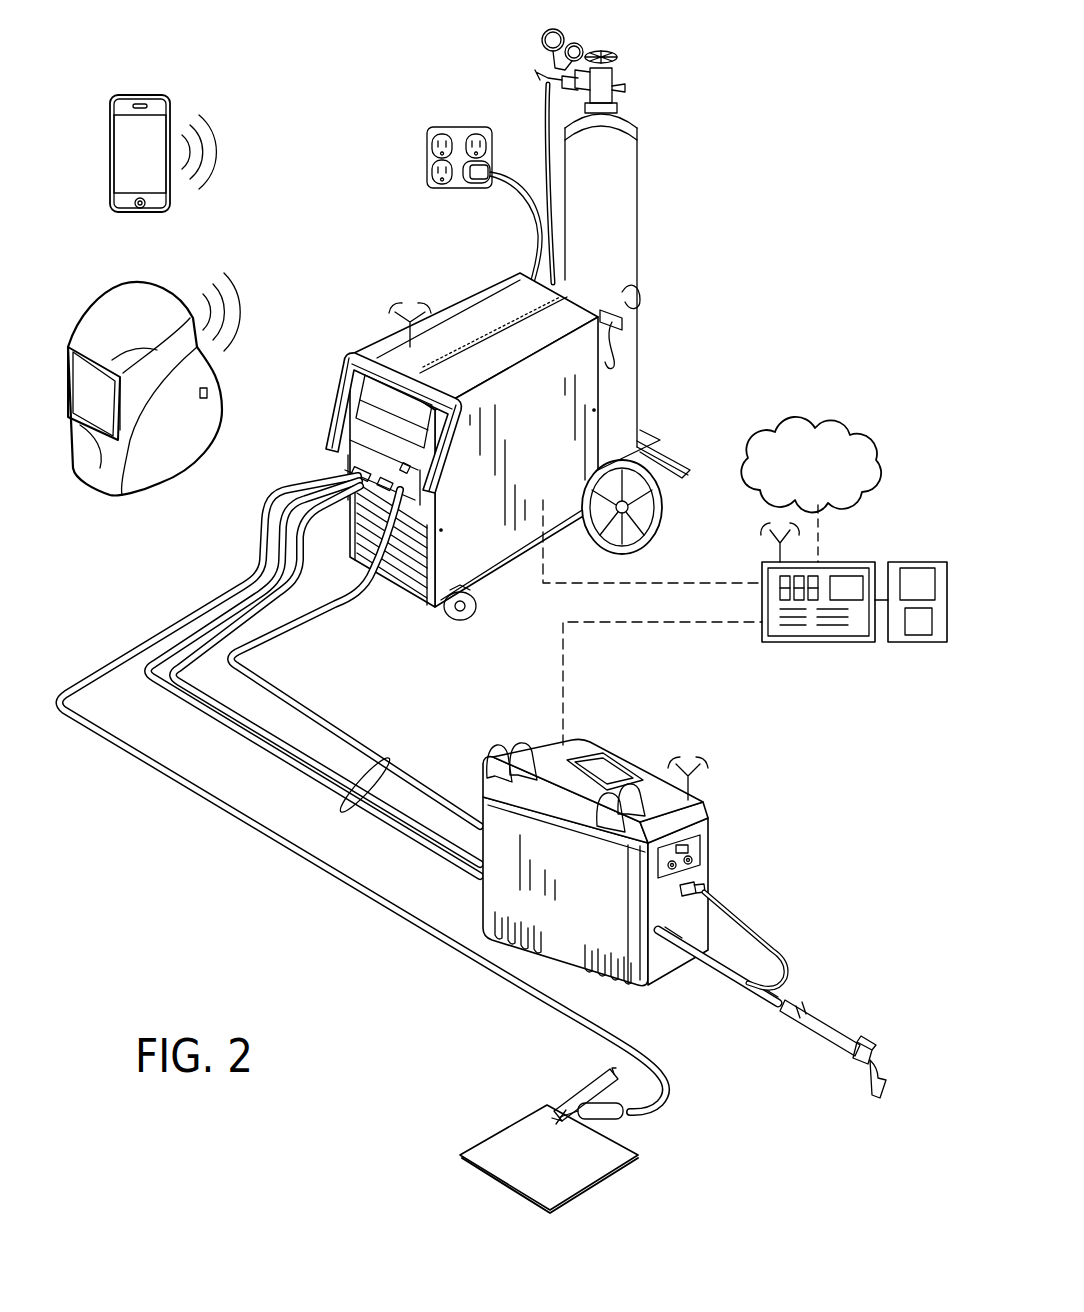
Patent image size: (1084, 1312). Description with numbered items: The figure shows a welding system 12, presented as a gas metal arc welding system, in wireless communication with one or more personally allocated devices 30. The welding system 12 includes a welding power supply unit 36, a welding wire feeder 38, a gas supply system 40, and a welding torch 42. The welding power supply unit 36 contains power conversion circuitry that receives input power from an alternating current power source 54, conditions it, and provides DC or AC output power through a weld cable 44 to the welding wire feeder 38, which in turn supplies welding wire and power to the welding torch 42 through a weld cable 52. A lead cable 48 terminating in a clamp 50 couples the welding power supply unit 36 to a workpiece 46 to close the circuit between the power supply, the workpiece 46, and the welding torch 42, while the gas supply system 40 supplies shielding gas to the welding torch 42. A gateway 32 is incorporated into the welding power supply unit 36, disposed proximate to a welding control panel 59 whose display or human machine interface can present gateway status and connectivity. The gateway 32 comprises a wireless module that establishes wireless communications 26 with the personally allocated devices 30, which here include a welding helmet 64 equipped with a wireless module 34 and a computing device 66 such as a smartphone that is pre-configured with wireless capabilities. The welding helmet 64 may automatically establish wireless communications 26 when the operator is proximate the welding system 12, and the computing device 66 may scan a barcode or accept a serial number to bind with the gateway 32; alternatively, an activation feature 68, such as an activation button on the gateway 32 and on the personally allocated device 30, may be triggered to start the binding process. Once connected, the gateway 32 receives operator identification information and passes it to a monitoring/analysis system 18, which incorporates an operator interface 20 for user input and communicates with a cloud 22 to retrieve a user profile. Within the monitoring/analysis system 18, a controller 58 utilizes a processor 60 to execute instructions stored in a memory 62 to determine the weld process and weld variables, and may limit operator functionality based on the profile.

The welding system 12 is at (338, 247).
The monitoring/analysis system 18 is at (822, 643).
The operator interface 20 is at (848, 576).
The cloud 22 is at (772, 427).
The wireless communications 26 is at (213, 131).
The personally allocated device 30 is at (99, 92).
The gateway 32 is at (362, 450).
The wireless module 34 is at (207, 393).
The welding power supply unit 36 is at (493, 302).
The welding wire feeder 38 is at (664, 733).
The gas supply system 40 is at (626, 198).
The welding torch 42 is at (818, 1025).
The weld cable 44 is at (390, 757).
The workpiece 46 is at (568, 1167).
The lead cable 48 is at (90, 677).
The clamp 50 is at (595, 1082).
The weld cable 52 is at (730, 985).
The alternating current power source 54 is at (425, 153).
The controller 58 is at (270, 706).
The welding control panel 59 is at (372, 392).
The processor 60 is at (918, 570).
The memory 62 is at (920, 643).
The welding helmet 64 is at (157, 480).
The computing device 66 is at (166, 96).
The activation feature 68 is at (140, 210).